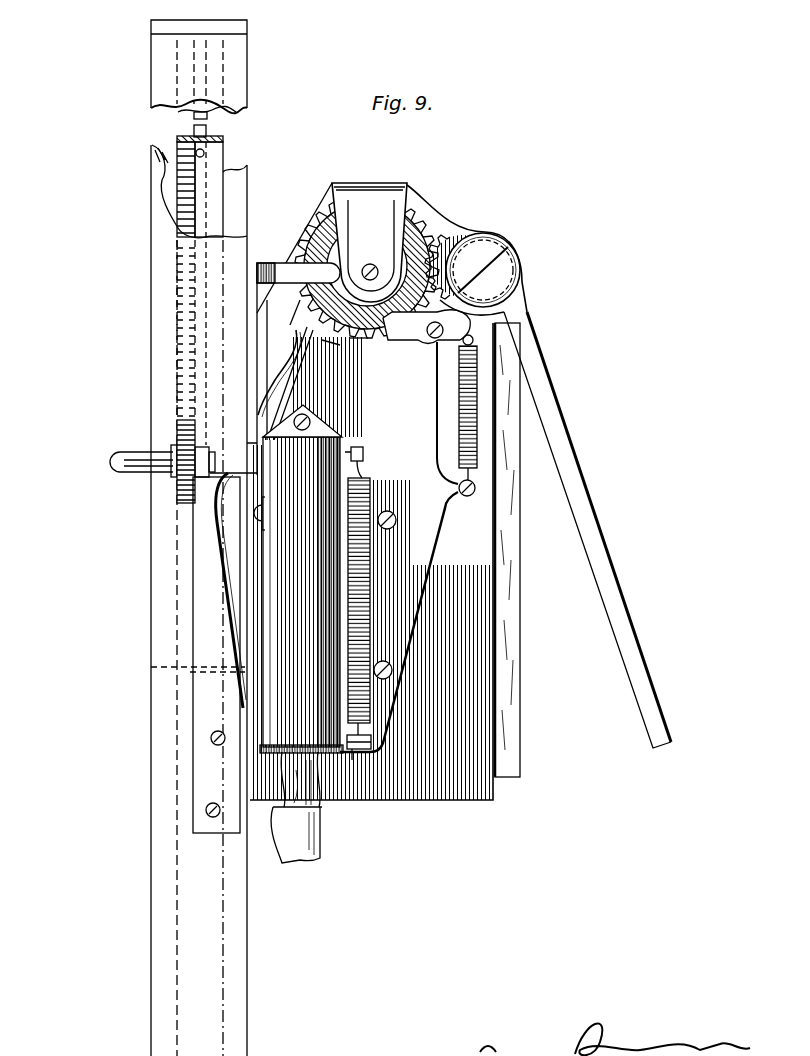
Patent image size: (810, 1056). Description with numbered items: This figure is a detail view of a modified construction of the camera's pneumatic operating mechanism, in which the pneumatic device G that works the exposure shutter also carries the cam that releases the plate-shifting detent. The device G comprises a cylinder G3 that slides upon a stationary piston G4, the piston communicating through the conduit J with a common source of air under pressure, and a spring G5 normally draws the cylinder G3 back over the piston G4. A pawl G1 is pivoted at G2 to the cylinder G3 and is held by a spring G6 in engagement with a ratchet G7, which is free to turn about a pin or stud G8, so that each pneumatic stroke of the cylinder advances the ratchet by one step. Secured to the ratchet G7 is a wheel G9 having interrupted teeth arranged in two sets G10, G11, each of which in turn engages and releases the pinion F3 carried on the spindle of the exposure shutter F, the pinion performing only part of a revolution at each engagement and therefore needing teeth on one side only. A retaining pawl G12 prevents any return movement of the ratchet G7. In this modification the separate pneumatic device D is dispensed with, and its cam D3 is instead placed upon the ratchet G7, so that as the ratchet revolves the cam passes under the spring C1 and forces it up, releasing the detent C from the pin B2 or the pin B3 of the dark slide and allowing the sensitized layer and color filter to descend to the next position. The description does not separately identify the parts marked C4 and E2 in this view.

The pin B2 is at (180, 455).
The pin B3 is at (195, 146).
The detent C is at (226, 477).
The spring C1 is at (205, 680).
The lever C4 is at (255, 412).
The pneumatic device D is at (522, 300).
The cam D3 is at (332, 264).
The pivot stud E2 is at (497, 283).
The exposure-shutter F is at (580, 490).
The pinion F3 is at (503, 229).
The pneumatic device G is at (371, 561).
The pawl G1 is at (330, 342).
The pivot G2 is at (310, 422).
The cylinder G3 is at (301, 595).
The piston G4 is at (338, 752).
The spring G5 is at (368, 602).
The spring G6 is at (268, 380).
The ratchet G7 is at (358, 342).
The pin or stud G8 is at (372, 266).
The wheel G9 is at (318, 247).
The set of teeth G10 is at (435, 226).
The set of teeth G11 is at (330, 305).
The retaining-pawl G12 is at (437, 325).
The conduit J is at (318, 832).